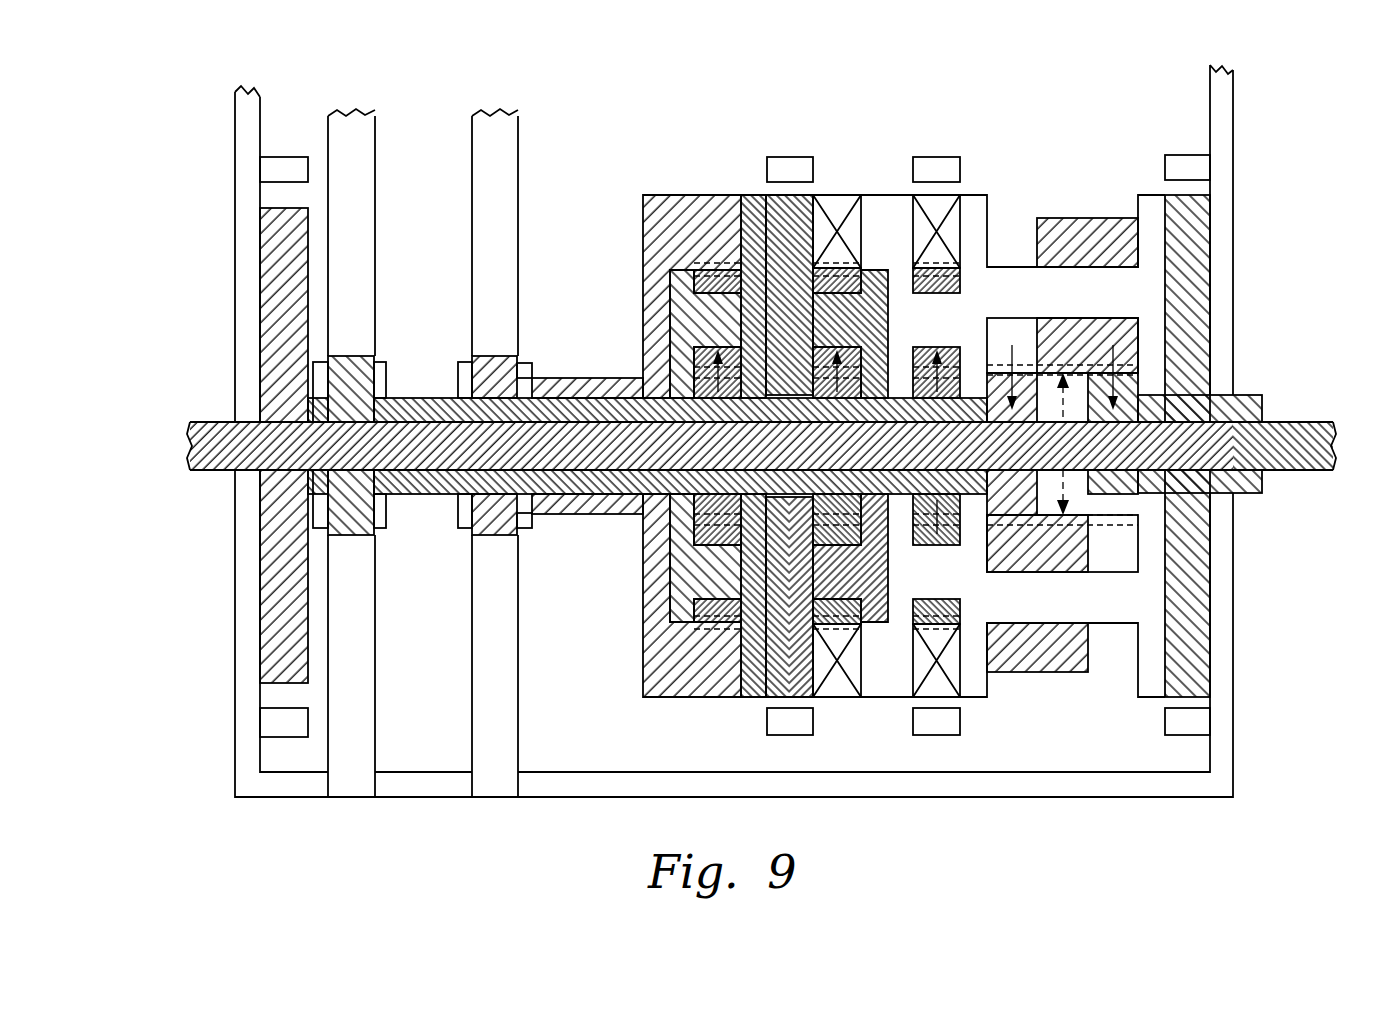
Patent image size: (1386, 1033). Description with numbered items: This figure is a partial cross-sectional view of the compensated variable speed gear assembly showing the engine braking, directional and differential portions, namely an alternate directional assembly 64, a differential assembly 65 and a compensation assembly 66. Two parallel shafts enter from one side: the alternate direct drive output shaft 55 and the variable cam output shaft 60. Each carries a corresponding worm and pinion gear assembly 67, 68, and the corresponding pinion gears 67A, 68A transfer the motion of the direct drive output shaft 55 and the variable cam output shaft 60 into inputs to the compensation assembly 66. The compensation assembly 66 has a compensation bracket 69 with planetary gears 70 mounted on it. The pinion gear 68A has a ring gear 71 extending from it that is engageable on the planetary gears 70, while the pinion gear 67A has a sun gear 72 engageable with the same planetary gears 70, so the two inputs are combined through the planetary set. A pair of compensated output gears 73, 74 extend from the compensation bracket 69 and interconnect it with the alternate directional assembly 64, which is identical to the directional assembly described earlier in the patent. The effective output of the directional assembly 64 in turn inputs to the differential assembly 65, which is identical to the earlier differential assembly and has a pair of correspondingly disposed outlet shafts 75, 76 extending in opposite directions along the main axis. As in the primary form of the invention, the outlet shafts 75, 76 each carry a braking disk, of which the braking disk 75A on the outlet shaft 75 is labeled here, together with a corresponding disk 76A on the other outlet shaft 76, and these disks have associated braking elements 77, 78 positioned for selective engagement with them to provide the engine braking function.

The direct drive output shaft 55 is at (358, 150).
The variable cam output shaft 60 is at (505, 165).
The alternate directional assembly 64 is at (877, 143).
The differential assembly 65 is at (1060, 183).
The compensation assembly 66 is at (722, 126).
The worm and pinion gear assembly 67 is at (400, 377).
The pinion gear 67A is at (356, 536).
The worm and pinion gear assembly 68 is at (541, 367).
The pinion gear 68A is at (577, 505).
The compensation bracket 69 is at (688, 308).
The planetary gears 70 is at (707, 272).
The ring gear 71 is at (728, 268).
The sun gear 72 is at (718, 388).
The compensated output gear 73 is at (838, 388).
The compensated output gear 74 is at (958, 435).
The outlet shaft 75 is at (1264, 446).
The braking disk 75A is at (1197, 283).
The outlet shaft 76 is at (1203, 462).
The end plate 76A is at (272, 287).
The braking element 77 is at (1195, 167).
The braking element 78 is at (283, 170).